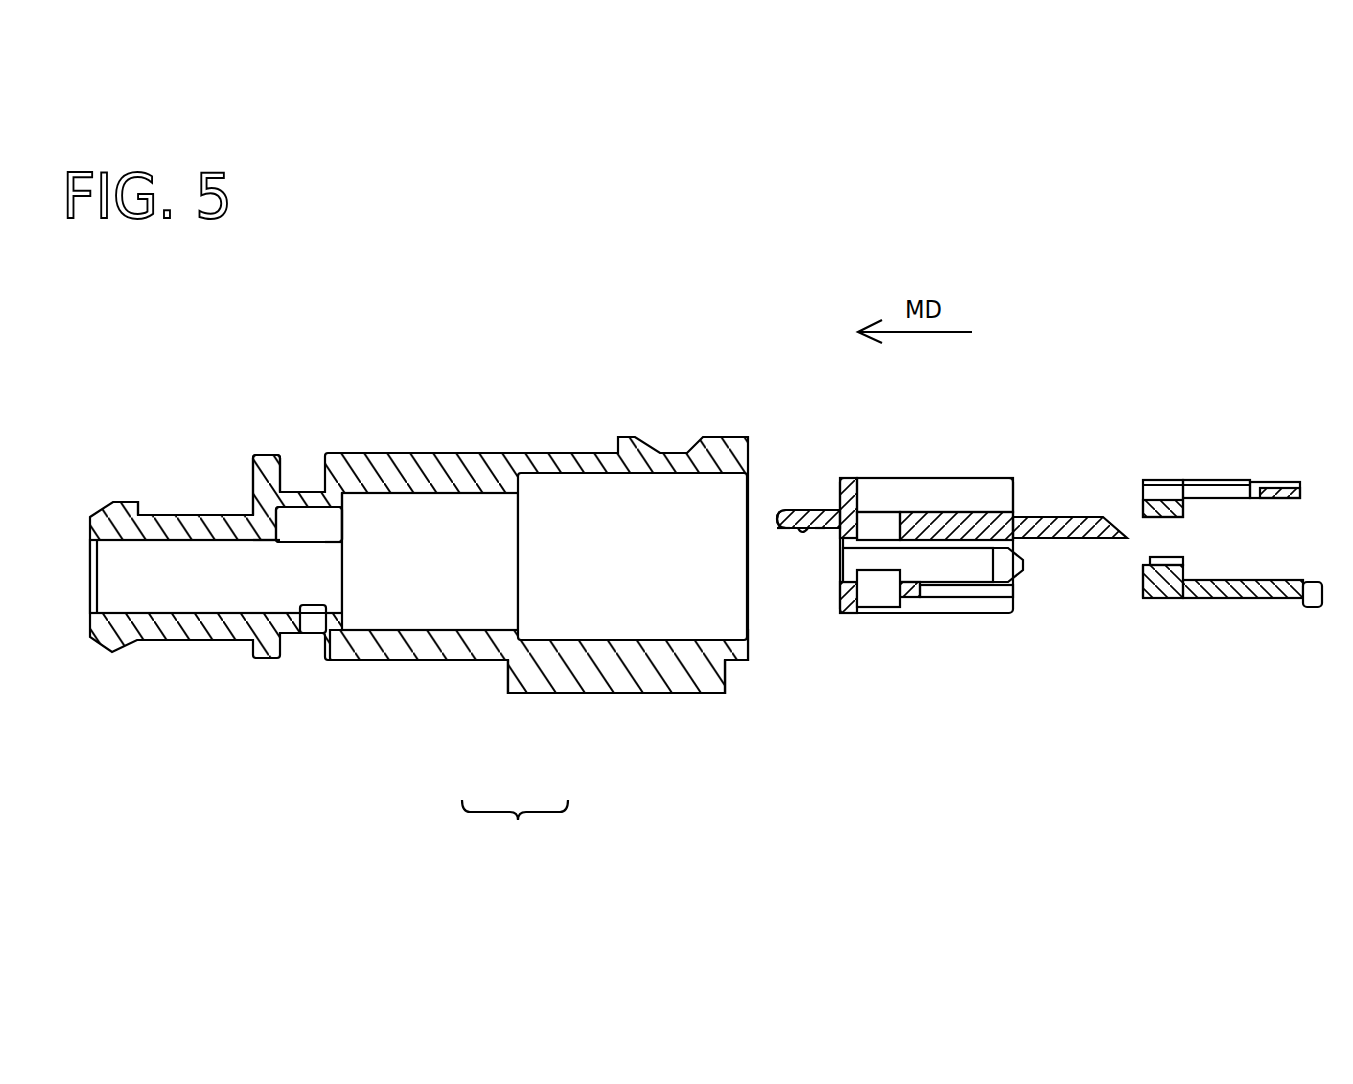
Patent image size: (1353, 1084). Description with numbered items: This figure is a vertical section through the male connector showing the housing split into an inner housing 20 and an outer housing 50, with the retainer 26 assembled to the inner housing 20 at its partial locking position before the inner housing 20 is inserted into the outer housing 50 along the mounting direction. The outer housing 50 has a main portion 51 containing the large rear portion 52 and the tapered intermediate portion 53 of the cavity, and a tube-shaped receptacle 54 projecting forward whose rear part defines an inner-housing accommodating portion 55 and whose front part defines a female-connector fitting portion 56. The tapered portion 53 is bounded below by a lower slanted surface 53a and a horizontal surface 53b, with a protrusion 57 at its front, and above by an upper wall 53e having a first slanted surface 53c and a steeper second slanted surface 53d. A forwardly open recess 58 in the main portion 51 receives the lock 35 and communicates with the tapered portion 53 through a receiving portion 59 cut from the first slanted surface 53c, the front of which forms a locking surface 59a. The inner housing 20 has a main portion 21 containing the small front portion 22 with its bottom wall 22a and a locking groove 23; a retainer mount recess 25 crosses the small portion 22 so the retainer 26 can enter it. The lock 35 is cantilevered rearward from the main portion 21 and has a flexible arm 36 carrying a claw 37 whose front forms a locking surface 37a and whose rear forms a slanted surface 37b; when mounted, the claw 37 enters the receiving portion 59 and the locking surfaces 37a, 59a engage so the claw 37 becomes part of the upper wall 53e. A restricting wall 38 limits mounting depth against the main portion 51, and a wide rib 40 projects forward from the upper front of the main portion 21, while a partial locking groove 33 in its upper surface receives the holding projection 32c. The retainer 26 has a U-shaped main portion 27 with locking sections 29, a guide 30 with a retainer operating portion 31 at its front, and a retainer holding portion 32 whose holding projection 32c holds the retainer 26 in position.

The inner housing 20 is at (1002, 614).
The main portion 21 is at (905, 500).
The small front portion 22 is at (943, 560).
The bottom wall 22a is at (905, 592).
The locking groove 23 is at (962, 598).
The retainer mount recess 25 is at (877, 605).
The retainer 26 is at (1202, 598).
The main portion 27 is at (1143, 580).
The locking section 29 is at (1167, 560).
The guide 30 is at (1240, 598).
The retainer operating portion 31 is at (1313, 604).
The retainer holding portion 32 is at (1237, 482).
The holding projection 32c is at (1272, 500).
The partial locking groove 33 is at (993, 515).
The lock 35 is at (783, 506).
The flexible arm 36 is at (815, 508).
The claw 37 is at (810, 540).
The locking surface 37a is at (822, 545).
The slanted surface 37b is at (782, 535).
The restricting wall 38 is at (845, 478).
The rib 40 is at (1045, 520).
The outer housing 50 is at (642, 693).
The main portion 51 is at (155, 508).
The large rear portion 52 is at (160, 597).
The tapered intermediate portion 53 is at (207, 640).
The lower slanted surface 53a is at (280, 575).
The horizontal surface 53b is at (318, 590).
The first slanted surface 53c is at (288, 545).
The second slanted surface 53d is at (352, 546).
The upper wall 53e is at (324, 556).
The receptacle 54 is at (593, 758).
The inner-housing accommodating portion 55 is at (457, 660).
The female-connector fitting portion 56 is at (553, 693).
The protrusion 57 is at (372, 634).
The recess 58 is at (333, 550).
The receiving portion 59 is at (268, 468).
The locking surface 59a is at (296, 530).